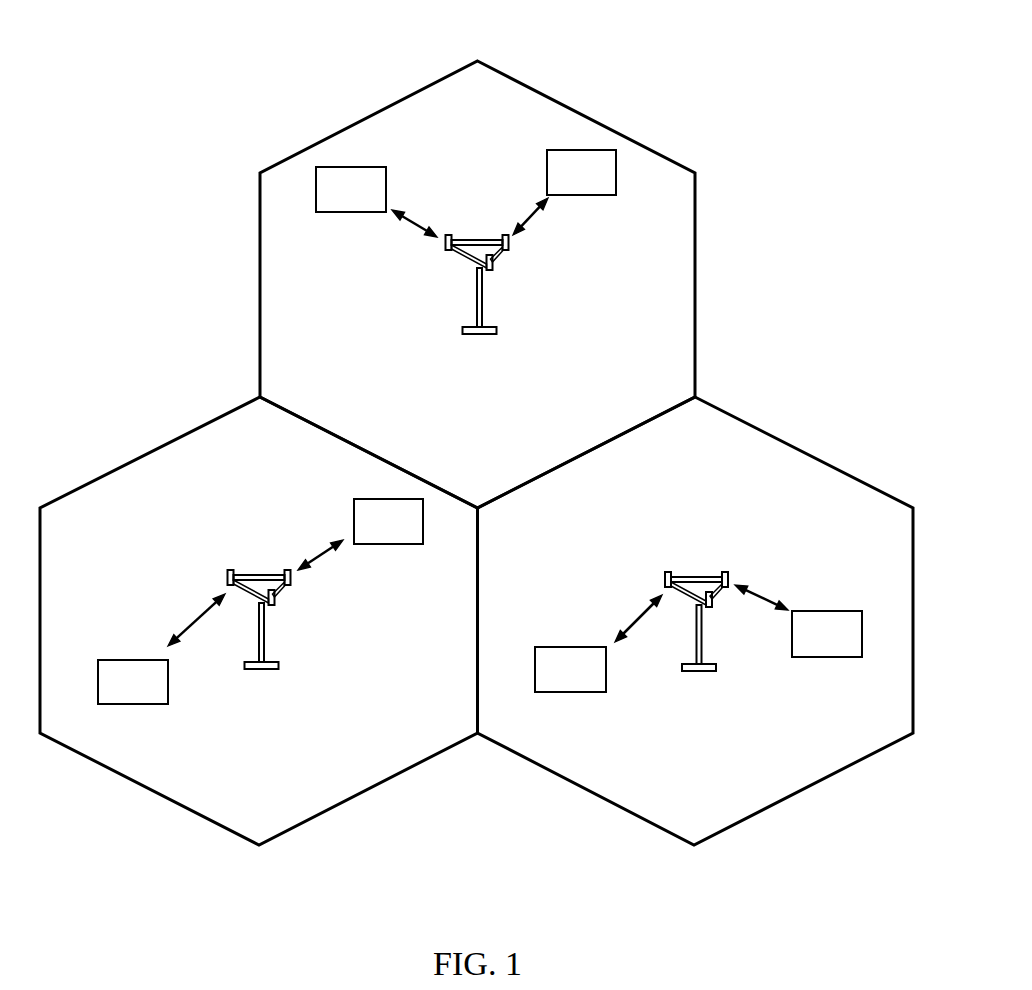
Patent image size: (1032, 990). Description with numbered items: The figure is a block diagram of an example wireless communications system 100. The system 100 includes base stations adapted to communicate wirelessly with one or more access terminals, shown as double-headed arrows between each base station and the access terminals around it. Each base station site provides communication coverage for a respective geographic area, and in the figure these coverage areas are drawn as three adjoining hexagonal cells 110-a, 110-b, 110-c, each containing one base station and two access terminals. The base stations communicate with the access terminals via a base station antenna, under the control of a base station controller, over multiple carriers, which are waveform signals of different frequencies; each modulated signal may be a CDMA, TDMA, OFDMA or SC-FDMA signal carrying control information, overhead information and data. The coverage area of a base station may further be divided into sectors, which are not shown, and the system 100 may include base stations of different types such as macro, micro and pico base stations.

The wireless communications system 100 is at (476, 437).
The cell 110-a is at (125, 465).
The cell 110-b is at (567, 105).
The cell 110-c is at (804, 452).